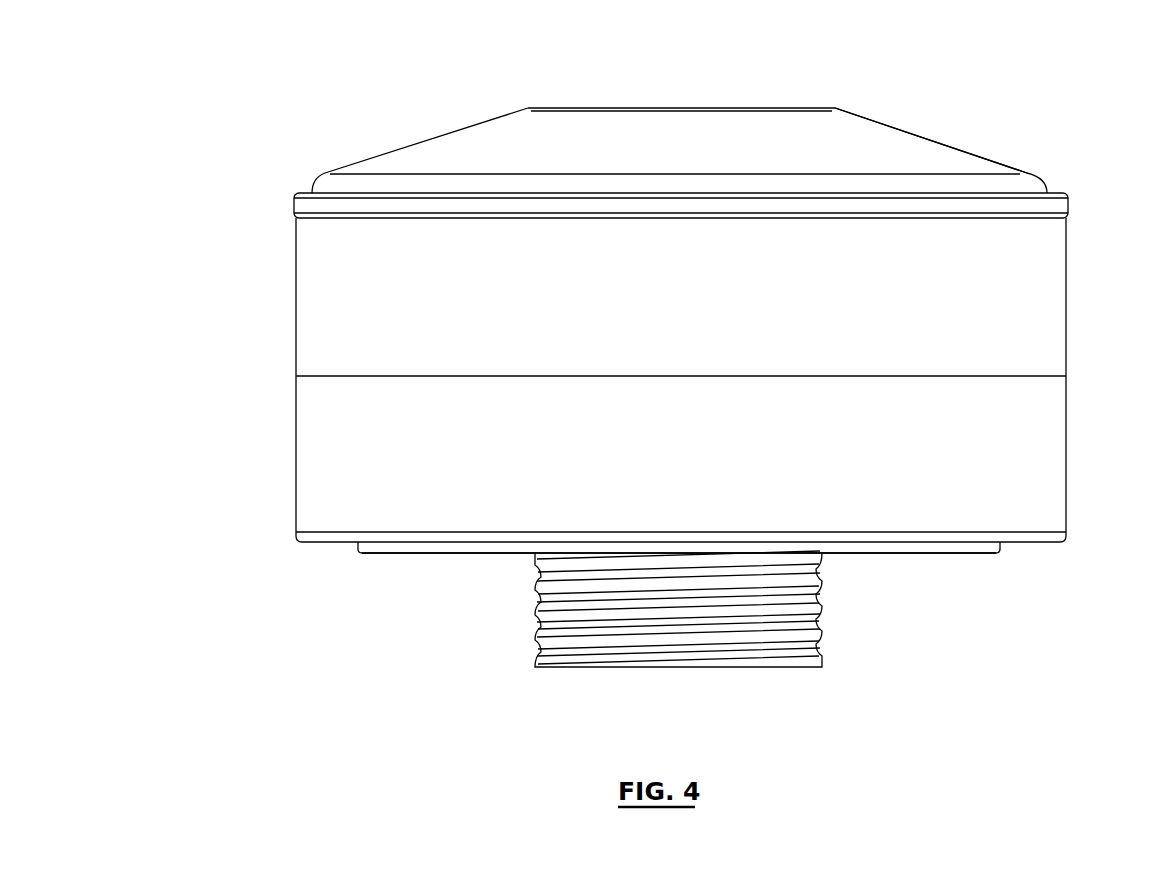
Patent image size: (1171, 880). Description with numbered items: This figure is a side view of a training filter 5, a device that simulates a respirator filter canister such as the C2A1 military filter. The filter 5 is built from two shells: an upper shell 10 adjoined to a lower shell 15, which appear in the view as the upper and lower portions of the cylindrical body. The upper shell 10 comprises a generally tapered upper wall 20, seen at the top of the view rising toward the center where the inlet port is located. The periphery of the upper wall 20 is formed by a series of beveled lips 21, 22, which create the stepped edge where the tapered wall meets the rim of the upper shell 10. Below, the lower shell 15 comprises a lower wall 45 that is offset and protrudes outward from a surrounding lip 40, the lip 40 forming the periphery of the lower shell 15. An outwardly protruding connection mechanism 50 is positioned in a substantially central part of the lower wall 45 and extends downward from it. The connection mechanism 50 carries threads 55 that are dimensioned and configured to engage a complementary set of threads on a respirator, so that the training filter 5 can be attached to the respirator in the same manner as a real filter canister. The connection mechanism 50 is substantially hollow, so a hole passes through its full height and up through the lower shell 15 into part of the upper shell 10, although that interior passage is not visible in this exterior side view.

The training filter 5 is at (1087, 106).
The upper shell 10 is at (312, 303).
The lower shell 15 is at (305, 470).
The upper wall 20 is at (470, 148).
The beveled lip 21 is at (1033, 183).
The beveled lip 22 is at (303, 195).
The surrounding lip 40 is at (1025, 542).
The lower wall 45 is at (907, 550).
The connection mechanism 50 is at (821, 628).
The threads 55 is at (540, 622).